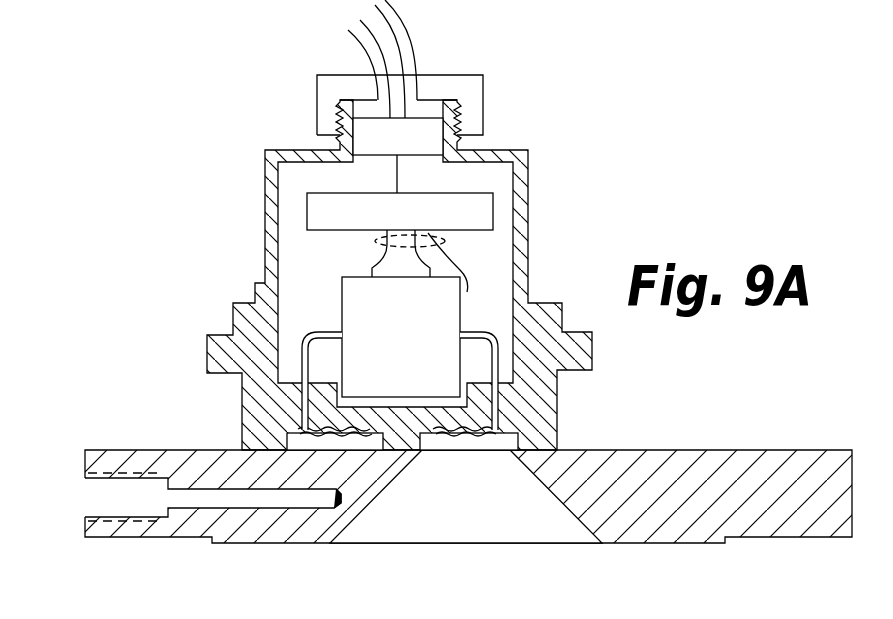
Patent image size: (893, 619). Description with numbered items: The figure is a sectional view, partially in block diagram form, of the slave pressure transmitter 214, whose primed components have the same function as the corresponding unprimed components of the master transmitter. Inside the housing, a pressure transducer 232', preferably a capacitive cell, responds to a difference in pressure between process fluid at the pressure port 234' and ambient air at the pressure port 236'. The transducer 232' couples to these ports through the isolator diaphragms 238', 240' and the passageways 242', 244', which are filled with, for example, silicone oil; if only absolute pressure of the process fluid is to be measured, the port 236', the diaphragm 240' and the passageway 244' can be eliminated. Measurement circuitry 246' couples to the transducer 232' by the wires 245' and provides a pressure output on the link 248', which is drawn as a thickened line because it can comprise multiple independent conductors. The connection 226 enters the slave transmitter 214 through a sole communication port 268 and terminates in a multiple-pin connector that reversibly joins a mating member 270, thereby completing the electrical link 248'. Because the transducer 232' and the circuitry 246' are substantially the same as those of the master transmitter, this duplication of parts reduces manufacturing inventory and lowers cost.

The slave pressure transmitter 214 is at (604, 112).
The connection 226 is at (400, 32).
The communication port 268 is at (338, 106).
The mating member 270 is at (426, 146).
The link 248' is at (433, 174).
The measurement circuitry 246' is at (400, 211).
The wires 245' is at (379, 261).
The pressure transducer 232' is at (401, 337).
The passageway 244' is at (249, 381).
The passageway 242' is at (542, 381).
The pressure port 236' is at (179, 497).
The isolator diaphragm 240' is at (383, 477).
The isolator diaphragm 238' is at (466, 496).
The pressure port 234' is at (468, 518).